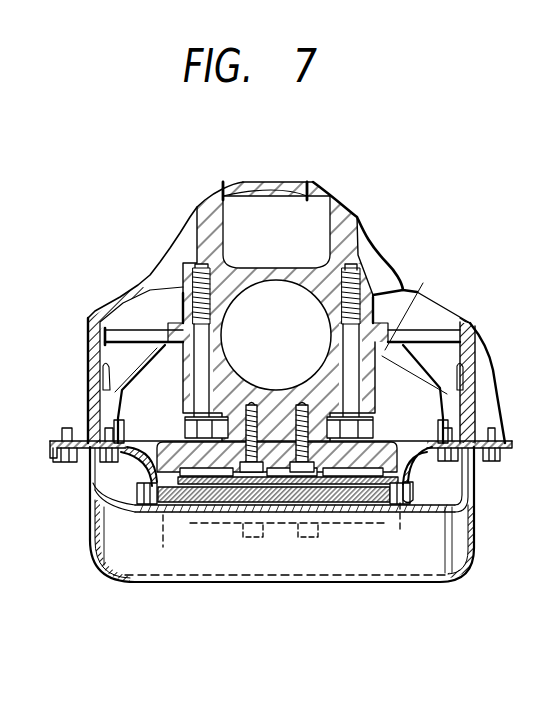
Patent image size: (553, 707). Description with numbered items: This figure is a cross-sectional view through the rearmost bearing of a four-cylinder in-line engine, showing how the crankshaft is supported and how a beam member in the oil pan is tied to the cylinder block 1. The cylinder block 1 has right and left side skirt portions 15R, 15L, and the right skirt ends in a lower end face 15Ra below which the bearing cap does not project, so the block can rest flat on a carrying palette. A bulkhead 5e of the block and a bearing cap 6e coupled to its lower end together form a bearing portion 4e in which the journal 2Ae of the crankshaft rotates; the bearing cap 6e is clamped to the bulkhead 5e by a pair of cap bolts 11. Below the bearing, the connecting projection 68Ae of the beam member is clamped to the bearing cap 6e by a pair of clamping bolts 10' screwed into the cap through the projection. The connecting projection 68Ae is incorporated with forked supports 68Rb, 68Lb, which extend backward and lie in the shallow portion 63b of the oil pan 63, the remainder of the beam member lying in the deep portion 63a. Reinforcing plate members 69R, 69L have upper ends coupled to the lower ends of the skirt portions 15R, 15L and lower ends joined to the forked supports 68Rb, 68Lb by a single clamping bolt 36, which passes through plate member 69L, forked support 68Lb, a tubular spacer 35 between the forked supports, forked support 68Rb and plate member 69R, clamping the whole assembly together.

The cylinder block 1 is at (83, 315).
The journal 2Ae is at (273, 297).
The bearing portion 4e is at (447, 256).
The bulkhead 5e is at (367, 283).
The bearing cap 6e is at (373, 289).
The cap bolts 11 is at (185, 427).
The right side skirt portion 15R is at (88, 415).
The lower end face of right side skirt portion 15Ra is at (56, 447).
The left side skirt portion 15L is at (477, 400).
The clamping bolts 10' is at (287, 482).
The clamping bolt 36 is at (362, 494).
The tubular spacer 35 is at (372, 505).
The oil pan 63 is at (478, 533).
The deep portion 63a is at (463, 567).
The shallow portion 63b is at (92, 538).
The reinforcing plate member 69R is at (93, 492).
The reinforcing plate member 69L is at (440, 493).
The connecting projection 68Ae is at (428, 468).
The forked support 68Rb is at (154, 509).
The forked support 68Lb is at (411, 533).